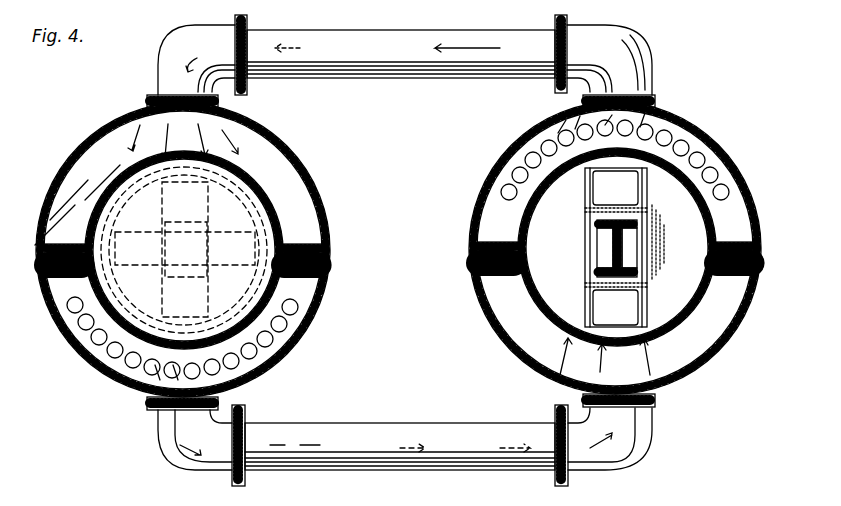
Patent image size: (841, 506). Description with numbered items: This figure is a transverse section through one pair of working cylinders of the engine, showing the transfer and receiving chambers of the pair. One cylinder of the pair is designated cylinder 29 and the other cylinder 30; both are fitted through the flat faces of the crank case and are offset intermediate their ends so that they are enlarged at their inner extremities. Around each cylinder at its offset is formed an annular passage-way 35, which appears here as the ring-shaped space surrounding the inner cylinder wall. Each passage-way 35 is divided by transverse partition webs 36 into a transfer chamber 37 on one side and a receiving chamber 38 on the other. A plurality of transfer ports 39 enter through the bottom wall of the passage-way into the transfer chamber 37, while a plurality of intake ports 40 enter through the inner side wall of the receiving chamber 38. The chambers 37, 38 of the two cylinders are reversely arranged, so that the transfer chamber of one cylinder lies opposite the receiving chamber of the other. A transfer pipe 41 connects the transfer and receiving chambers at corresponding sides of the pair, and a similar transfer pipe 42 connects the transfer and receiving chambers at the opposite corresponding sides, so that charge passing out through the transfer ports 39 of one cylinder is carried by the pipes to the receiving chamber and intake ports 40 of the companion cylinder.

The working cylinder 29 is at (704, 348).
The working cylinder 30 is at (118, 372).
The annular passage-way 35 is at (322, 247).
The transverse partition web 36 is at (52, 246).
The transfer chamber 37 is at (310, 292).
The receiving chamber 38 is at (297, 207).
The transfer port 39 is at (268, 345).
The intake port 40 is at (285, 152).
The transfer pipe 41 is at (466, 78).
The transfer pipe 42 is at (430, 440).